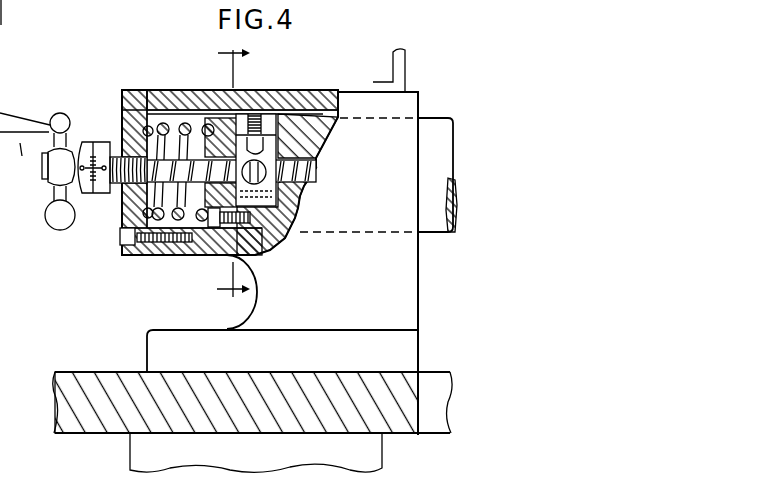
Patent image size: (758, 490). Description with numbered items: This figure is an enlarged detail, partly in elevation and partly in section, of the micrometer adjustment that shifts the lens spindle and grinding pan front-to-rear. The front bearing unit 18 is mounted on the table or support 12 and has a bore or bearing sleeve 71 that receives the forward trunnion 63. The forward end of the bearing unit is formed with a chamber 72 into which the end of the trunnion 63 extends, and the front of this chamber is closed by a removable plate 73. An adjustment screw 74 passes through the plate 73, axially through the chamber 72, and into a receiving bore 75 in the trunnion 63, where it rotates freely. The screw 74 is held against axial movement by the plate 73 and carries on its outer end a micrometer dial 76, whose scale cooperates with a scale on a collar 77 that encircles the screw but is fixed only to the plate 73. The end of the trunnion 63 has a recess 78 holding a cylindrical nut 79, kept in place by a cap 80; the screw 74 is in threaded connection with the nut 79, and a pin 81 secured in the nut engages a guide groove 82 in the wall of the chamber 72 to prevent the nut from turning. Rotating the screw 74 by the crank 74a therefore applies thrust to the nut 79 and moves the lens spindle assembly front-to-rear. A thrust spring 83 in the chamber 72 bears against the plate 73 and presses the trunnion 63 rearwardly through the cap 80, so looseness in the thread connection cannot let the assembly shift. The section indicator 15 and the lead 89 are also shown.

The table or support 12 is at (87, 383).
The section line 15 is at (233, 174).
The front bearing unit 18 is at (188, 84).
The forward trunnion 63 is at (430, 135).
The bore or bearing sleeve 71 is at (338, 93).
The chamber 72 is at (175, 115).
The removable plate 73 is at (133, 90).
The adjustment screw 74 is at (148, 176).
The crank 74a is at (73, 170).
The receiving bore 75 is at (202, 221).
The micrometer dial 76 is at (83, 138).
The collar 77 is at (102, 146).
The recess 78 is at (293, 125).
The cylindrical nut 79 is at (270, 197).
The cap 80 is at (241, 133).
The pin 81 is at (265, 122).
The guide groove 82 is at (204, 118).
The thrust spring 83 is at (178, 220).
The lead 89 is at (0, 7).